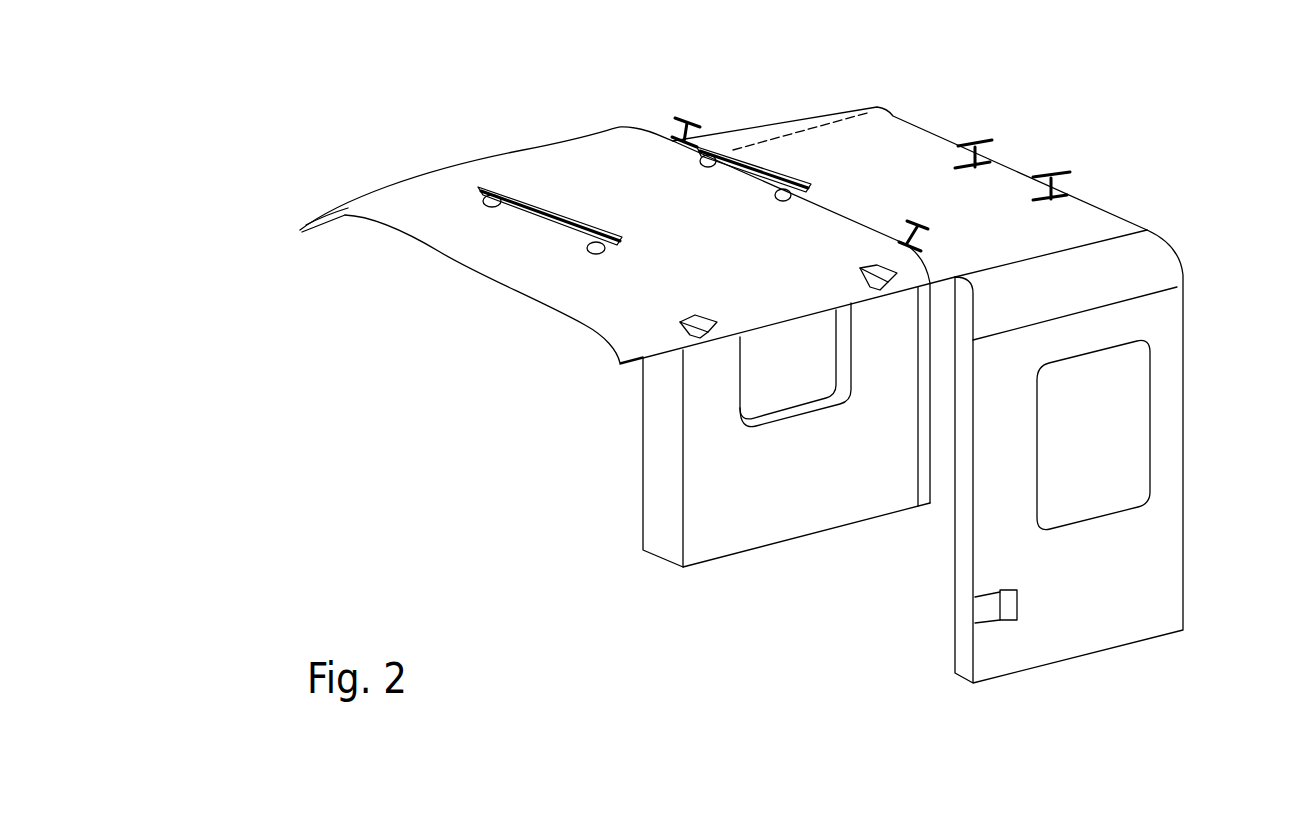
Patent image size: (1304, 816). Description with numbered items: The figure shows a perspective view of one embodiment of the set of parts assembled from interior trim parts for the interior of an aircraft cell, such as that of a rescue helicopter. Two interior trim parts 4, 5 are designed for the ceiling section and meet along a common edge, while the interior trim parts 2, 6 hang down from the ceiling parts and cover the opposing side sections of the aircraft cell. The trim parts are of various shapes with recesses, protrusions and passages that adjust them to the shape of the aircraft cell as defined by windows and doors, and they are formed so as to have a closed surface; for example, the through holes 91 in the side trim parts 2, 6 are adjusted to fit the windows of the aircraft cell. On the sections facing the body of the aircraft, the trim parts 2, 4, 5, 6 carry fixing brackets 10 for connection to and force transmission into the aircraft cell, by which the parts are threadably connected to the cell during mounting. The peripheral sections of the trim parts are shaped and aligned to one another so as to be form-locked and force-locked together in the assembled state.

The interior trim part 2 is at (1148, 570).
The interior trim part 4 is at (895, 157).
The interior trim part 5 is at (535, 250).
The interior trim part 6 is at (740, 512).
The fixing bracket 10 is at (677, 123).
The through hole 91 is at (802, 378).